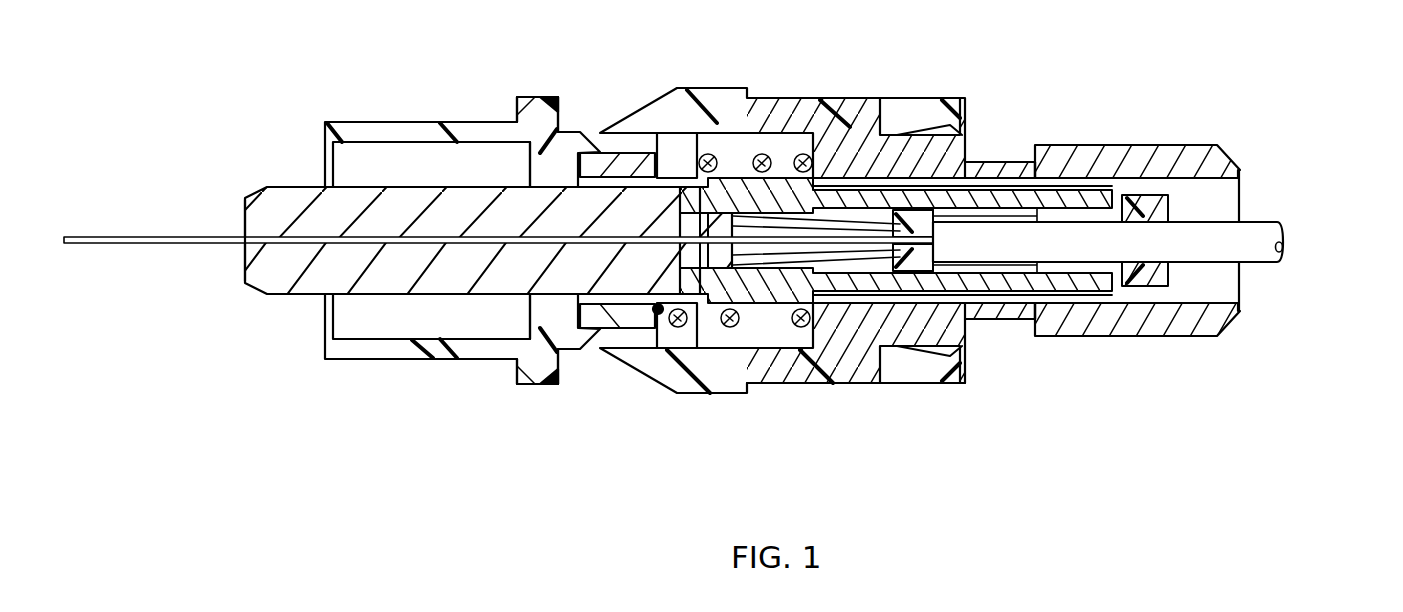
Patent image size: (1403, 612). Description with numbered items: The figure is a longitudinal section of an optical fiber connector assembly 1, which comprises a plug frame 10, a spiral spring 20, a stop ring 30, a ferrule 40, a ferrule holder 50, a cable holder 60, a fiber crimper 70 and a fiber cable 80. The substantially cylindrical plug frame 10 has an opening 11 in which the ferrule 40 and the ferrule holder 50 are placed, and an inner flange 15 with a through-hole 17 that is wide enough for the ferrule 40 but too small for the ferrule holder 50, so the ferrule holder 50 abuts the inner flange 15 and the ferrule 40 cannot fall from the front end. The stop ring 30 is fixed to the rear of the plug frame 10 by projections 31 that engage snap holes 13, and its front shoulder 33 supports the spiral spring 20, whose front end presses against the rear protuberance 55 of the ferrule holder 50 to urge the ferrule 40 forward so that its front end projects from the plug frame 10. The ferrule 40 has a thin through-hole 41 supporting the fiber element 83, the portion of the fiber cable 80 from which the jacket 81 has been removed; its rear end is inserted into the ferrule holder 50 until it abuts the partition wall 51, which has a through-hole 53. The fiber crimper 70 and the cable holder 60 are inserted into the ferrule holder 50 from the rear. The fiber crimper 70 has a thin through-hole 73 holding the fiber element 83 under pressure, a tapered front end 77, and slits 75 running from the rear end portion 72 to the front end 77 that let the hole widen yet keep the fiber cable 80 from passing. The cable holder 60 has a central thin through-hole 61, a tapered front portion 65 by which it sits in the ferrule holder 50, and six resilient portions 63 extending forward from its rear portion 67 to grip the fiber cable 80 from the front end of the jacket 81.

The optical fiber connector assembly 1 is at (206, 409).
The plug frame 10 is at (392, 125).
The opening 11 is at (363, 162).
The snap holes 13 is at (868, 122).
The inner flange 15 is at (573, 297).
The through-hole 17 is at (552, 297).
The spiral spring 20 is at (800, 140).
The stop ring 30 is at (1130, 160).
The projections 31 is at (898, 118).
The front shoulder 33 is at (813, 320).
The ferrule 40 is at (283, 213).
The thin through-hole 41 is at (403, 240).
The ferrule holder 50 is at (1027, 287).
The partition wall 51 is at (700, 340).
The through-hole 53 is at (610, 333).
The rear protuberance 55 is at (632, 160).
The cable holder 60 is at (1123, 340).
The central thin through-hole 61 is at (1030, 215).
The resilient portions 63 is at (1075, 267).
The front portion 65 is at (975, 195).
The rear portion 67 is at (1160, 197).
The fiber crimper 70 is at (800, 262).
The rear end portion 72 is at (915, 275).
The thin through-hole 73 is at (770, 262).
The slits 75 is at (885, 275).
The front end 77 is at (760, 155).
The fiber cable 80 is at (1293, 215).
The jacket 81 is at (1260, 253).
The fiber element 83 is at (513, 237).